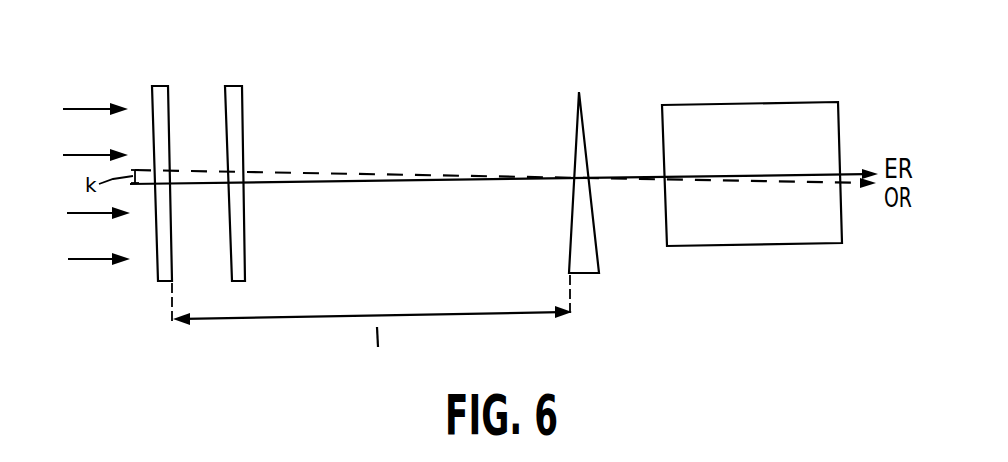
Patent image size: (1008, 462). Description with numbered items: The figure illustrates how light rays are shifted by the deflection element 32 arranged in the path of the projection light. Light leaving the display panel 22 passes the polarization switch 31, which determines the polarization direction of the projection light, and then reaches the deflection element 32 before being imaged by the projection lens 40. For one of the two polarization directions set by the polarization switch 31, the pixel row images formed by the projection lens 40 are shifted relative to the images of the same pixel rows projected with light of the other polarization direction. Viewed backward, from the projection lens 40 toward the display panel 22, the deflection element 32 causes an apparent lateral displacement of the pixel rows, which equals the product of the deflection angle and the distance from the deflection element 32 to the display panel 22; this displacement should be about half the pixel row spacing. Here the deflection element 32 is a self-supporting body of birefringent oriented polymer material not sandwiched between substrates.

The display panel 22 is at (159, 153).
The polarization switch 31 is at (234, 153).
The deflection element 32 is at (579, 146).
The projection lens 40 is at (752, 141).